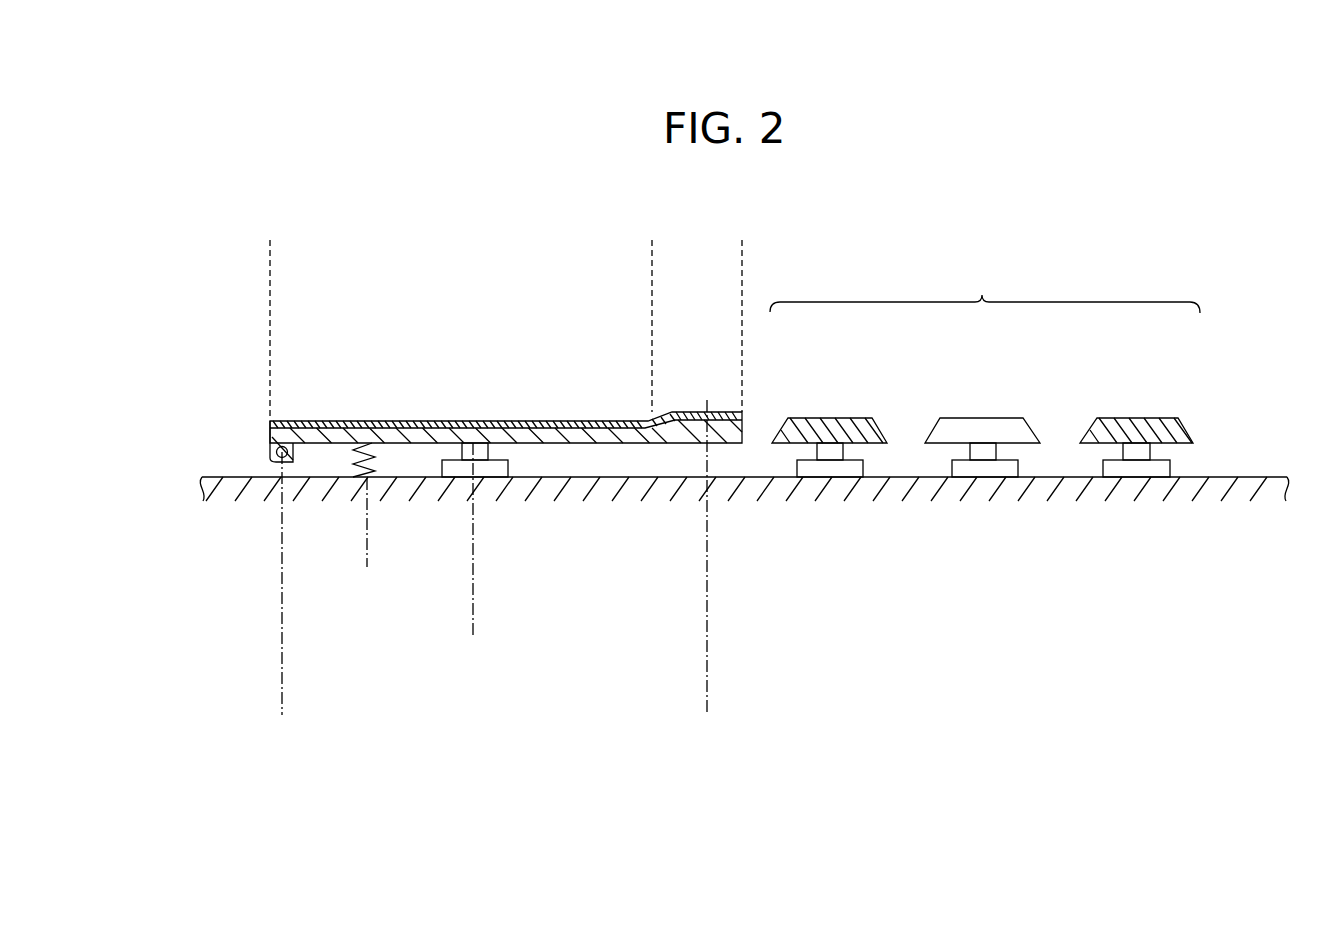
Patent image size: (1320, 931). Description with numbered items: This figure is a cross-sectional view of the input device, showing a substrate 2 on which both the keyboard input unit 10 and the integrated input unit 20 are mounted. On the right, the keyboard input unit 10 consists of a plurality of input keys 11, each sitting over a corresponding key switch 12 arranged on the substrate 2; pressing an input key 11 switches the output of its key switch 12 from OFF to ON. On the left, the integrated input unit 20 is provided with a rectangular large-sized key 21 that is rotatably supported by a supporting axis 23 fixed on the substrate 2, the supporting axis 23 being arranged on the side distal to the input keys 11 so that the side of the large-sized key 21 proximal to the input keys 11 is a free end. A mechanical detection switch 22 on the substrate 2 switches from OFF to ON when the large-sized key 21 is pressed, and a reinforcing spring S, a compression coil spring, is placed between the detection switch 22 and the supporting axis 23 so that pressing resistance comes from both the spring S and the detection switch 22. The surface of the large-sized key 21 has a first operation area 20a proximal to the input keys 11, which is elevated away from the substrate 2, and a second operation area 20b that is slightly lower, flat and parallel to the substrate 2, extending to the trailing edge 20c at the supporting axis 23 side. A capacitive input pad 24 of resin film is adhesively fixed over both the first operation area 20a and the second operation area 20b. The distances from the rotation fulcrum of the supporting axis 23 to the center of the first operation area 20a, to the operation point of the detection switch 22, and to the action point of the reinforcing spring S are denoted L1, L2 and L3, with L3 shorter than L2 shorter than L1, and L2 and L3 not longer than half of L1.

The substrate 2 is at (1242, 490).
The keyboard input unit 10 is at (985, 419).
The input key 11 is at (850, 417).
The key switch 12 is at (823, 470).
The integrated input unit 20 is at (442, 408).
The first operation area 20a is at (652, 255).
The second operation area 20b is at (652, 255).
The trailing edge 20c is at (270, 421).
The large-sized key 21 is at (588, 425).
The detection switch 22 is at (487, 470).
The supporting axis 23 is at (276, 461).
The capacitive input pad 24 is at (512, 421).
The reinforcing spring S is at (386, 444).
The distance from supporting axis to center of first operation area L1 is at (707, 699).
The distance from supporting axis to operation point of detection switch L2 is at (473, 625).
The distance from supporting axis to action point of reinforcing spring L3 is at (367, 558).